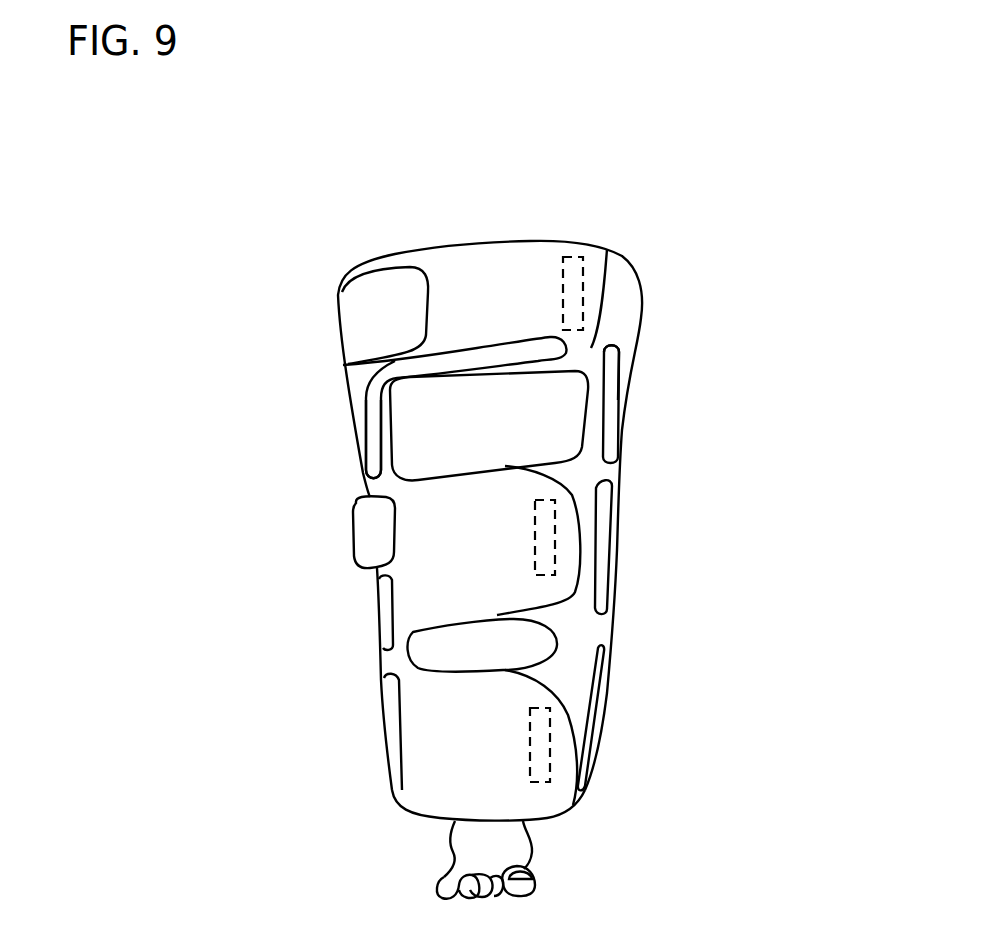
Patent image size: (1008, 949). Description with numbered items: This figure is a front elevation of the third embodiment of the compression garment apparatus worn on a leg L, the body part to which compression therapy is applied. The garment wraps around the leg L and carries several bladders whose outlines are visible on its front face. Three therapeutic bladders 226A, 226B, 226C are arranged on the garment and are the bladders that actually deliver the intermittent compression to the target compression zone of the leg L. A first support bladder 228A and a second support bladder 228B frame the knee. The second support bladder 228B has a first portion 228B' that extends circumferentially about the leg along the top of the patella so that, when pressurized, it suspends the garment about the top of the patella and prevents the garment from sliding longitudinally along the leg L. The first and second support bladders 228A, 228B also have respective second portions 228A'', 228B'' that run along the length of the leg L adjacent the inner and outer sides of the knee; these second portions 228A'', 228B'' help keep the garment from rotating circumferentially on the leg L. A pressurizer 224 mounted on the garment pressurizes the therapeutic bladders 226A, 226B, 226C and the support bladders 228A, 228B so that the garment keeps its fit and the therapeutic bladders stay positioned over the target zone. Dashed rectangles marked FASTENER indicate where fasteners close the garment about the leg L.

The pressurizer 224 is at (342, 523).
The therapeutic bladder 226A is at (392, 730).
The therapeutic bladder 226B is at (385, 613).
The therapeutic bladder 226C is at (350, 318).
The first support bladder 228A is at (673, 567).
The second portion of first support bladder 228A'' is at (686, 370).
The second support bladder 228B is at (300, 418).
The first portion of second support bladder 228B' is at (454, 336).
The second portion of second support bladder 228B'' is at (406, 425).
The fastener FASTENER is at (573, 275).
The leg L is at (742, 596).